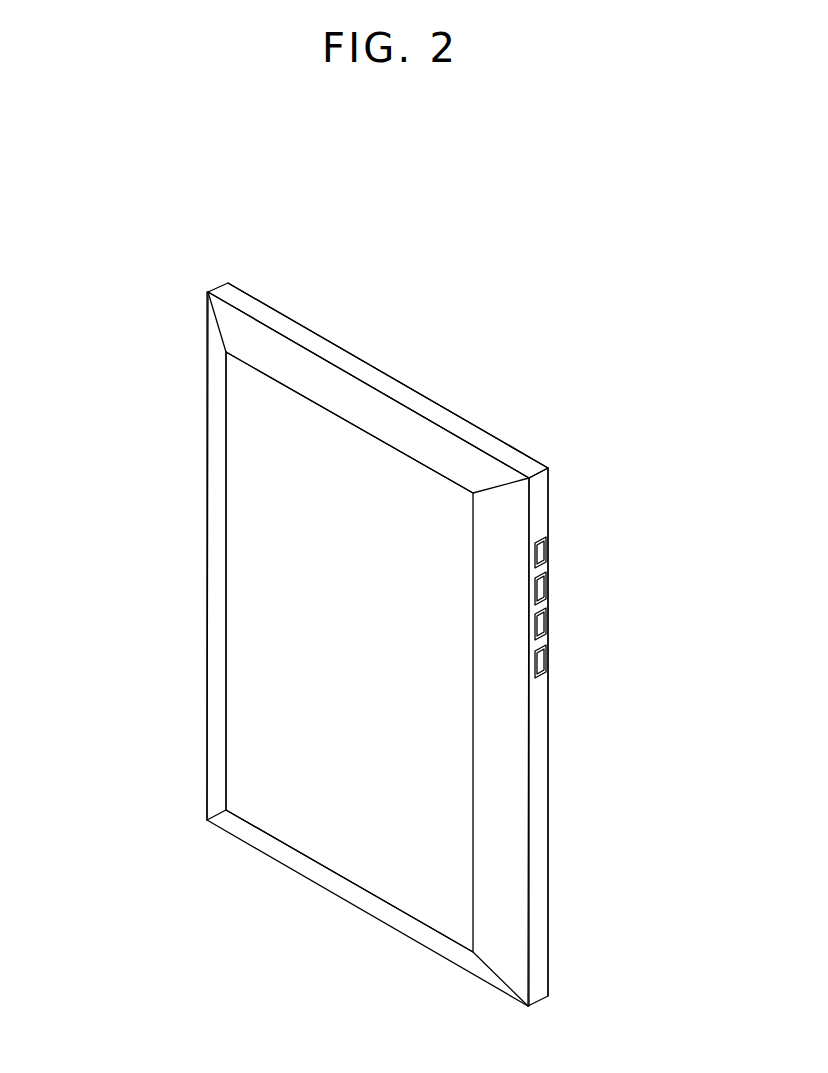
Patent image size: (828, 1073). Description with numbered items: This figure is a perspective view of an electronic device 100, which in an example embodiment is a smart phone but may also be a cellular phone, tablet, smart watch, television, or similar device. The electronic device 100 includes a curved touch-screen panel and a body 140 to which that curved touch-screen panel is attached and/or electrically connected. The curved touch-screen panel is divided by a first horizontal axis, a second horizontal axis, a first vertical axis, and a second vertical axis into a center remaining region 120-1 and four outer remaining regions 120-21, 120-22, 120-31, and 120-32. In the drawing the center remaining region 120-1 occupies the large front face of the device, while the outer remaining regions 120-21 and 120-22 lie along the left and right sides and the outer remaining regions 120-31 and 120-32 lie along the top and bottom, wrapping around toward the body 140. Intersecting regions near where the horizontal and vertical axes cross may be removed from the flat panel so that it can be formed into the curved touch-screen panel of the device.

The electronic device 100 is at (510, 282).
The center remaining region 120-1 is at (357, 832).
The outer remaining region 120-21 is at (214, 627).
The outer remaining region 120-22 is at (493, 761).
The outer remaining region 120-31 is at (362, 420).
The outer remaining region 120-32 is at (290, 860).
The body 140 is at (503, 455).